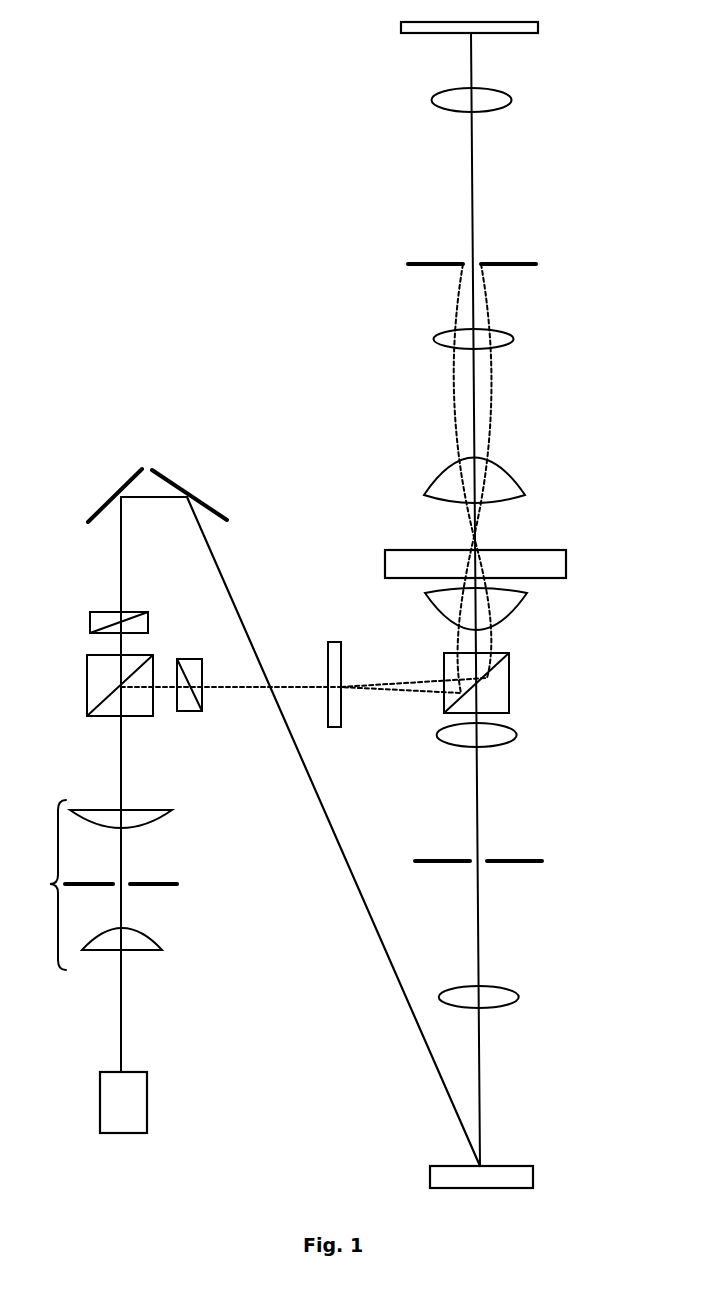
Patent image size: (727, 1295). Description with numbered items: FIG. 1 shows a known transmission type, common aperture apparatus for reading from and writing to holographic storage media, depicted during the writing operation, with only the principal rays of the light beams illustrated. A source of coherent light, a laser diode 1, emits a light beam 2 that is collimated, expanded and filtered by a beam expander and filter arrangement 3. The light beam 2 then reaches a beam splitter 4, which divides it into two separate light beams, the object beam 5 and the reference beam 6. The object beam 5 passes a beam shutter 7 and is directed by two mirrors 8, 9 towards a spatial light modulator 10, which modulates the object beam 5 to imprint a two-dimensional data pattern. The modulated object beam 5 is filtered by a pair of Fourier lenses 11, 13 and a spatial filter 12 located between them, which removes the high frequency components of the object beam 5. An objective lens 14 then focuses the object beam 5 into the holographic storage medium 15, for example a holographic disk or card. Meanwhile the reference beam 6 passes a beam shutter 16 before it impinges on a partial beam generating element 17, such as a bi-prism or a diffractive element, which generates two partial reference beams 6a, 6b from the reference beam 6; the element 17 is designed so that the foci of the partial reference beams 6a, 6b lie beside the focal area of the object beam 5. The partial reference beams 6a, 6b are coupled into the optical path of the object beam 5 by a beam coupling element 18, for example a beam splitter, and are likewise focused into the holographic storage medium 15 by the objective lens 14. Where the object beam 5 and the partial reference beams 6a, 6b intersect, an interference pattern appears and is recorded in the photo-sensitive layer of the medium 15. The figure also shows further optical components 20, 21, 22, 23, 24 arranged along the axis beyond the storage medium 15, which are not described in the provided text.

The laser diode 1 is at (95, 1100).
The light beam 2 is at (126, 1020).
The beam expander and filter arrangement 3 is at (103, 885).
The beam splitter 4 is at (85, 690).
The object beam 5 is at (118, 570).
The reference beam 6 is at (230, 688).
The partial reference beam 6a is at (419, 710).
The partial reference beam 6b is at (422, 677).
The beam shutter 7 is at (88, 624).
The mirror 8 is at (110, 490).
The mirror 9 is at (192, 493).
The spatial light modulator 10 is at (411, 1176).
The Fourier lens 11 is at (522, 992).
The spatial filter 12 is at (545, 860).
The Fourier lens 13 is at (520, 735).
The objective lens 14 is at (527, 600).
The holographic storage medium 15 is at (567, 560).
The beam shutter 16 is at (192, 712).
The partial beam generating element 17 is at (330, 650).
The beam coupling element 18 is at (511, 690).
The condenser lens 20 is at (430, 480).
The lens 21 is at (432, 340).
The aperture / field stop 22 is at (407, 265).
The lens 23 is at (432, 100).
The detector 24 is at (400, 33).